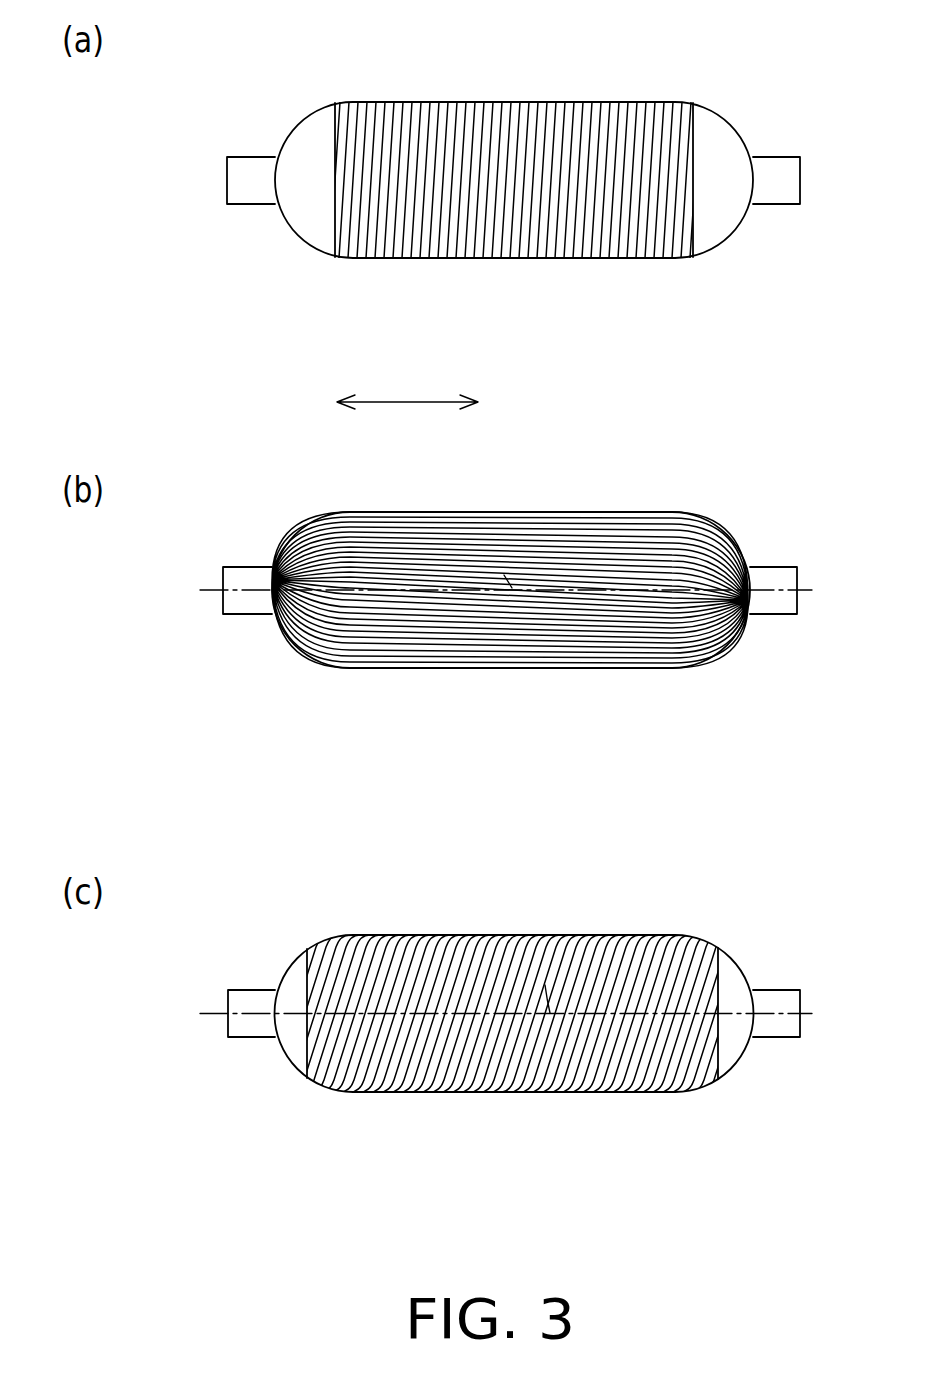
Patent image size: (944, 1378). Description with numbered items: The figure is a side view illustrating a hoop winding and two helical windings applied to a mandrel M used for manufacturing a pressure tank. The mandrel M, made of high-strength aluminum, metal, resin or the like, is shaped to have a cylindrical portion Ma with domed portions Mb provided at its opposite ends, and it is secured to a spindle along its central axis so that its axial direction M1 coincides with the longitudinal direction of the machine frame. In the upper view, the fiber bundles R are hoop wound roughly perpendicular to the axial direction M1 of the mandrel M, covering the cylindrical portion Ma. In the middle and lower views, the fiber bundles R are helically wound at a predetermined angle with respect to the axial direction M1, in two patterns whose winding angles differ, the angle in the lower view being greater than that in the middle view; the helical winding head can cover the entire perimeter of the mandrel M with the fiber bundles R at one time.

The mandrel M is at (300, 115).
The cylindrical portion Ma is at (514, 258).
The domed portions Mb is at (305, 232).
The axial direction M1 is at (405, 402).
The fiber bundles R is at (491, 104).